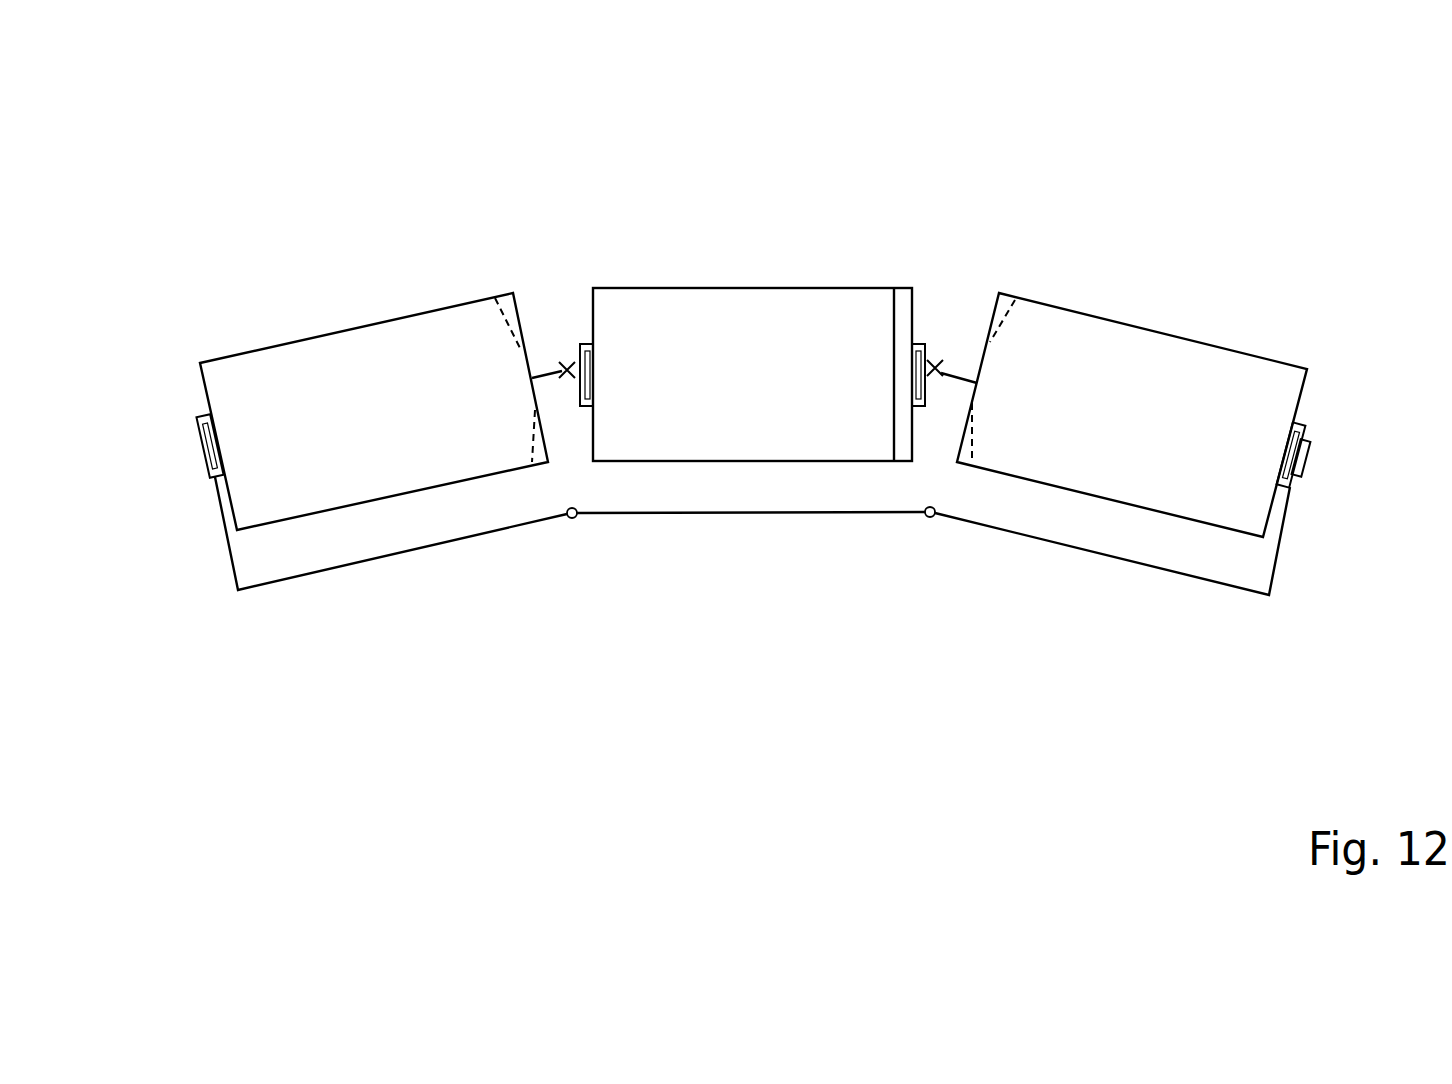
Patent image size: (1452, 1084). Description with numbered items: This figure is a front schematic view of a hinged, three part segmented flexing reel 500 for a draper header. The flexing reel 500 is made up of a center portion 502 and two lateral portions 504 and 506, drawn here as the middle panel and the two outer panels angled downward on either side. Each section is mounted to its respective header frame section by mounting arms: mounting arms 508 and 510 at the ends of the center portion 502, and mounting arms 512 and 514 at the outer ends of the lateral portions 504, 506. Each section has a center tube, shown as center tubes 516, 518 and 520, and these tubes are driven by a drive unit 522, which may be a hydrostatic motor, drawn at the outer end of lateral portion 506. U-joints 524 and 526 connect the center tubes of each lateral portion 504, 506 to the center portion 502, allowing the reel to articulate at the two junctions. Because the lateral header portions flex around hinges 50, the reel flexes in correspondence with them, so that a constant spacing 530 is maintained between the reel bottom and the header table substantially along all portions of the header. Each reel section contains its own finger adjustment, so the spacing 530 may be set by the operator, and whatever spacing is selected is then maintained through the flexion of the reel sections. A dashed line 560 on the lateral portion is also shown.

The flexing reel 500 is at (314, 250).
The center portion 502 is at (732, 387).
The lateral portion 504 is at (342, 417).
The lateral portion 506 is at (1115, 412).
The mounting arm 508 is at (579, 343).
The mounting arm 510 is at (925, 343).
The mounting arm 512 is at (200, 417).
The mounting arm 514 is at (1305, 423).
The center tube 516 is at (543, 373).
The center tube 518 is at (942, 363).
The center tube 520 is at (960, 377).
The drive unit 522 is at (1308, 447).
The U-joint 524 is at (567, 381).
The U-joint 526 is at (935, 381).
The hinge 50 is at (932, 518).
The spacing 530 is at (1127, 465).
The fold line 560 is at (1003, 328).